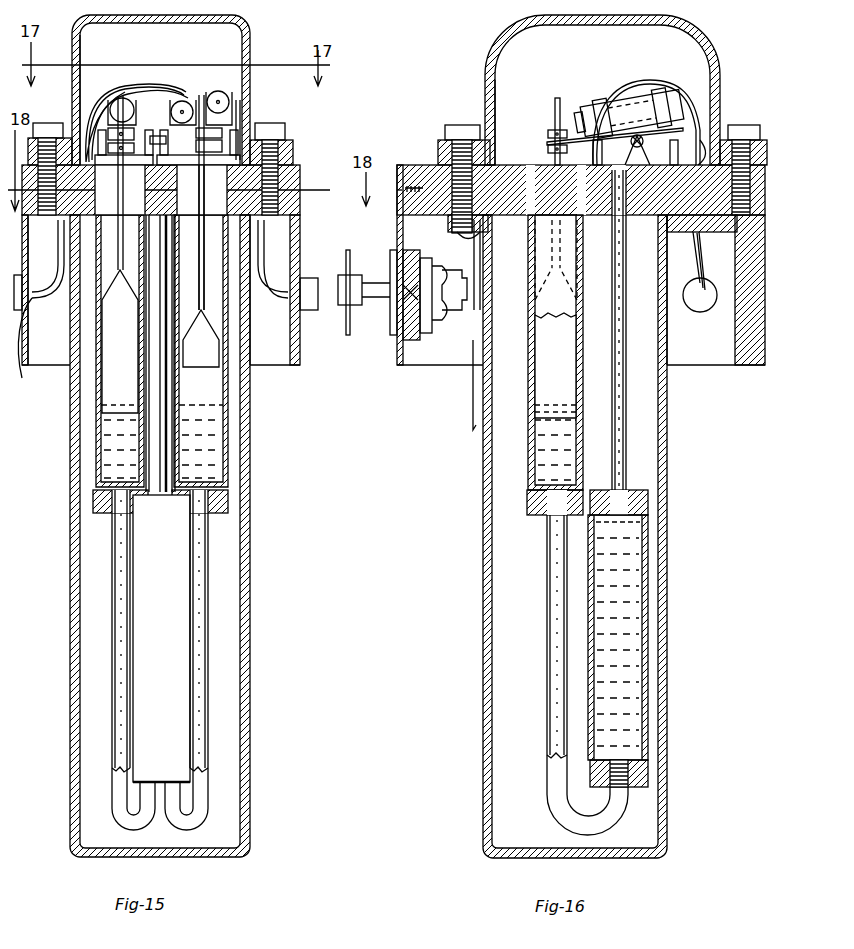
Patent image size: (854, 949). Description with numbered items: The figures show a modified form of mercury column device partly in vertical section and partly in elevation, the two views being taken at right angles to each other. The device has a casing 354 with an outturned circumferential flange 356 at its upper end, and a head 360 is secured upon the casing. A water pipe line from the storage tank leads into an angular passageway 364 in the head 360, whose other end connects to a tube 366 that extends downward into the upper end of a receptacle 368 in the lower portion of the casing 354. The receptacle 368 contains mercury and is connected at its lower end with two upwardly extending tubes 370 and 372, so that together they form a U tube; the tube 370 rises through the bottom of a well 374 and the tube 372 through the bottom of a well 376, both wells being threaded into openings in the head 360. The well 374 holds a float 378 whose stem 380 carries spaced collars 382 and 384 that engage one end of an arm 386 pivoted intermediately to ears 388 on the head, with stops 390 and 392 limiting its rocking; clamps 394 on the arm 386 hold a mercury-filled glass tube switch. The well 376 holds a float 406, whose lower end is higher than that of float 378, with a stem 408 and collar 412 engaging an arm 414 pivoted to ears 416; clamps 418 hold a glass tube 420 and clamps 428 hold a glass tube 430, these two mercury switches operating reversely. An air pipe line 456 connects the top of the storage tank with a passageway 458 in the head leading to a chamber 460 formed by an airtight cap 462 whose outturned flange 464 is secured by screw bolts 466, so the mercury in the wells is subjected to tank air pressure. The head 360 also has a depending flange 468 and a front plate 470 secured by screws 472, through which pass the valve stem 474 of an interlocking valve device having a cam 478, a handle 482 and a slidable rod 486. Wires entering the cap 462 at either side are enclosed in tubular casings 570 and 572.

In FIG. 15, the casing 354 is at (249, 727).
In FIG. 16, the casing 354 is at (482, 778).
In FIG. 16, the outturned circumferential flange 356 is at (705, 226).
In FIG. 15, the head 360 is at (300, 206).
In FIG. 16, the head 360 is at (400, 210).
In FIG. 16, the angular passageway 364 is at (757, 186).
In FIG. 15, the tube 366 is at (158, 477).
In FIG. 16, the tube 366 is at (628, 435).
In FIG. 15, the receptacle 368 is at (172, 643).
In FIG. 16, the receptacle 368 is at (649, 600).
In FIG. 15, the tube 370 is at (120, 808).
In FIG. 16, the tube 370 is at (553, 800).
In FIG. 15, the tube 372 is at (207, 808).
In FIG. 15, the well 374 is at (97, 441).
In FIG. 16, the well 374 is at (555, 352).
In FIG. 15, the well 376 is at (230, 447).
In FIG. 15, the float 378 is at (115, 386).
In FIG. 16, the float 378 is at (545, 392).
In FIG. 15, the stem 380 is at (117, 262).
In FIG. 16, the collar 382 is at (548, 133).
In FIG. 15, the collar 384 is at (110, 140).
In FIG. 16, the collar 384 is at (548, 145).
In FIG. 16, the arm 386 is at (578, 105).
In FIG. 15, the ears 388 is at (88, 108).
In FIG. 16, the ears 388 is at (648, 140).
In FIG. 16, the stop 390 is at (548, 153).
In FIG. 16, the stop 392 is at (678, 143).
In FIG. 15, the clamps 394 is at (132, 100).
In FIG. 16, the clamps 394 is at (657, 88).
In FIG. 15, the float 406 is at (208, 358).
In FIG. 15, the stem 408 is at (204, 297).
In FIG. 15, the collar 412 is at (172, 142).
In FIG. 15, the arm 414 is at (293, 147).
In FIG. 15, the ears 416 is at (240, 126).
In FIG. 15, the clamps 418 is at (150, 95).
In FIG. 15, the glass tube 420 is at (184, 100).
In FIG. 15, the clamps 428 is at (240, 100).
In FIG. 15, the glass tube 430 is at (228, 93).
In FIG. 16, the air pipe line 456 is at (473, 427).
In FIG. 16, the passageway 458 is at (520, 206).
In FIG. 15, the chamber 460 is at (88, 44).
In FIG. 16, the chamber 460 is at (518, 52).
In FIG. 15, the airtight cap 462 is at (248, 22).
In FIG. 16, the airtight cap 462 is at (719, 62).
In FIG. 15, the outturned circumferential flange 464 is at (290, 136).
In FIG. 16, the outturned circumferential flange 464 is at (446, 137).
In FIG. 15, the screw bolts 466 is at (285, 126).
In FIG. 16, the screw bolts 466 is at (461, 126).
In FIG. 15, the depending flange 468 is at (300, 360).
In FIG. 16, the depending flange 468 is at (752, 360).
In FIG. 16, the plate 470 is at (398, 367).
In FIG. 16, the screws 472 is at (401, 188).
In FIG. 16, the valve stem 474 is at (373, 300).
In FIG. 16, the cam 478 is at (417, 340).
In FIG. 16, the handle 482 is at (348, 262).
In FIG. 16, the slidable rod 486 is at (407, 343).
In FIG. 15, the tubular casing 570 is at (22, 378).
In FIG. 15, the tubular casing 572 is at (312, 312).